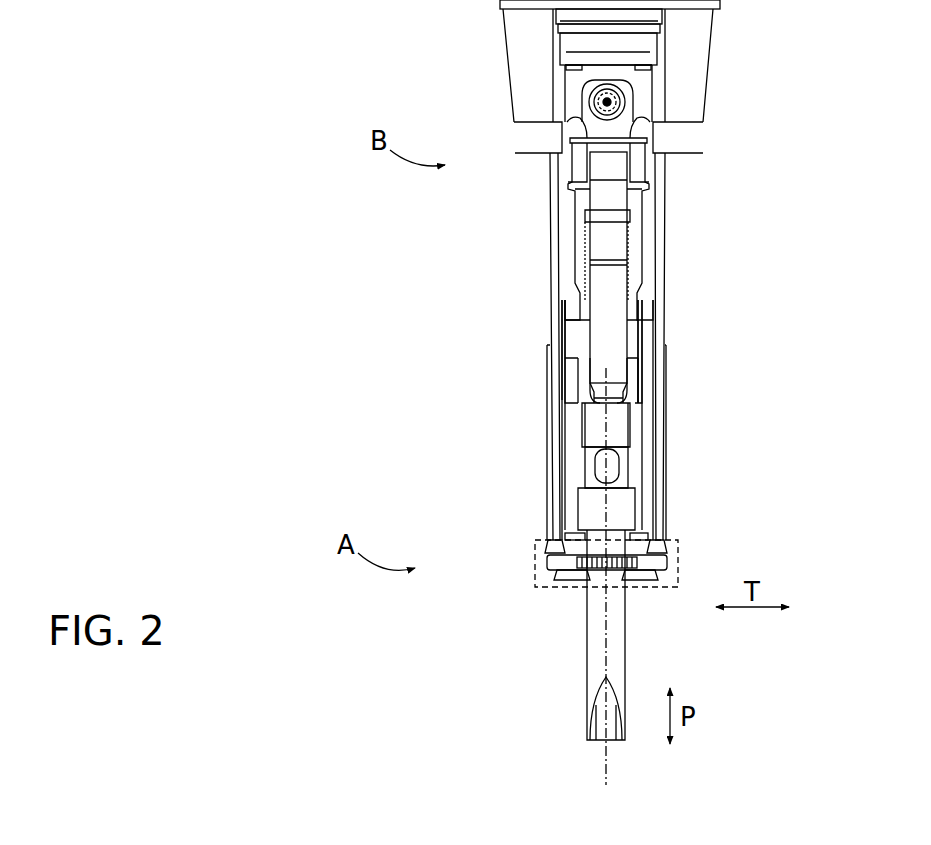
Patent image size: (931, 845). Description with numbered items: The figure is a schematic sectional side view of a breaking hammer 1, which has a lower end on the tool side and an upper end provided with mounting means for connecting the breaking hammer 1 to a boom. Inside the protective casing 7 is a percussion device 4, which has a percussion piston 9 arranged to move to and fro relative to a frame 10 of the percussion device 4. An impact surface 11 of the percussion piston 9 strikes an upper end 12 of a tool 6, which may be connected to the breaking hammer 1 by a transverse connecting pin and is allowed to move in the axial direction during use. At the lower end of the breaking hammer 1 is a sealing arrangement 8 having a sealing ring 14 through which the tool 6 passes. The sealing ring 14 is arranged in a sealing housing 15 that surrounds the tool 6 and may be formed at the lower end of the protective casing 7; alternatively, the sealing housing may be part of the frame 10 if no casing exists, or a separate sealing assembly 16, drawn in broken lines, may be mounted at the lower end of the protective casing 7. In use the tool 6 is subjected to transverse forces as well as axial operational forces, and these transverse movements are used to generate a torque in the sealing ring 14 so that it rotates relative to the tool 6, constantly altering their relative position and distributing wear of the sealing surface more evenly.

The breaking hammer 1 is at (378, 265).
The percussion device 4 is at (570, 250).
The tool 6 is at (600, 652).
The protective casing 7 is at (660, 462).
The sealing arrangement 8 is at (707, 566).
The percussion piston 9 is at (598, 338).
The frame 10 is at (643, 373).
The impact surface 11 is at (620, 420).
The upper end 12 is at (598, 395).
The sealing ring 14 is at (600, 578).
The sealing housing 15 is at (558, 543).
The sealing assembly 16 is at (535, 572).